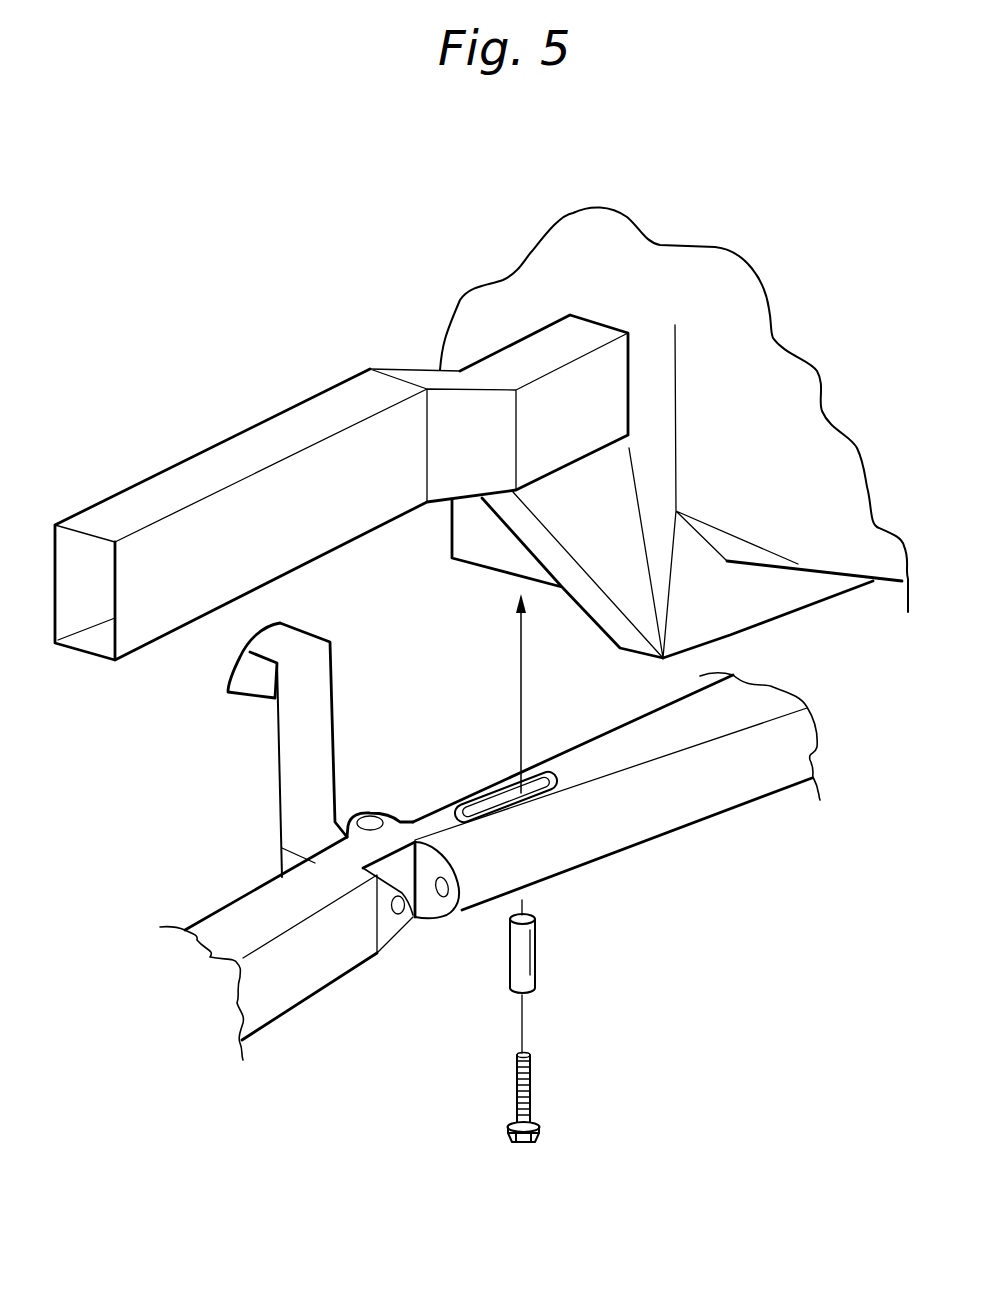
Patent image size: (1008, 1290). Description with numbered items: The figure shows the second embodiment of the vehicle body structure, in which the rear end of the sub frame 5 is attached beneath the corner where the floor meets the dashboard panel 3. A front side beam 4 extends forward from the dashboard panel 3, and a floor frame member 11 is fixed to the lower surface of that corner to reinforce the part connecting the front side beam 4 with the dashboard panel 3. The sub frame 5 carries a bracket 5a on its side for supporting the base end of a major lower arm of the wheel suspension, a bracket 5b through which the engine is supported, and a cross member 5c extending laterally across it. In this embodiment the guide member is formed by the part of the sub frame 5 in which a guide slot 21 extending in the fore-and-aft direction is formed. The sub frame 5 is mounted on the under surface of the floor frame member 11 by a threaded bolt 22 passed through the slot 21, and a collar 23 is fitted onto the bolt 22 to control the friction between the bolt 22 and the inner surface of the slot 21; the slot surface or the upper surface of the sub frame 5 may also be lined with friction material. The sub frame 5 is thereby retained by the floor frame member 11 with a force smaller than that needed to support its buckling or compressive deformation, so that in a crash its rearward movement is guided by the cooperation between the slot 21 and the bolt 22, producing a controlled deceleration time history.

The dashboard panel 3 is at (824, 550).
The front side beam 4 is at (290, 418).
The floor frame member 11 is at (527, 533).
The sub frame 5 is at (718, 800).
The bracket 5a is at (427, 945).
The bracket 5b is at (368, 812).
The cross member 5c is at (318, 690).
The guide slot 21 is at (478, 793).
The threaded bolt 22 is at (532, 1092).
The collar 23 is at (537, 950).